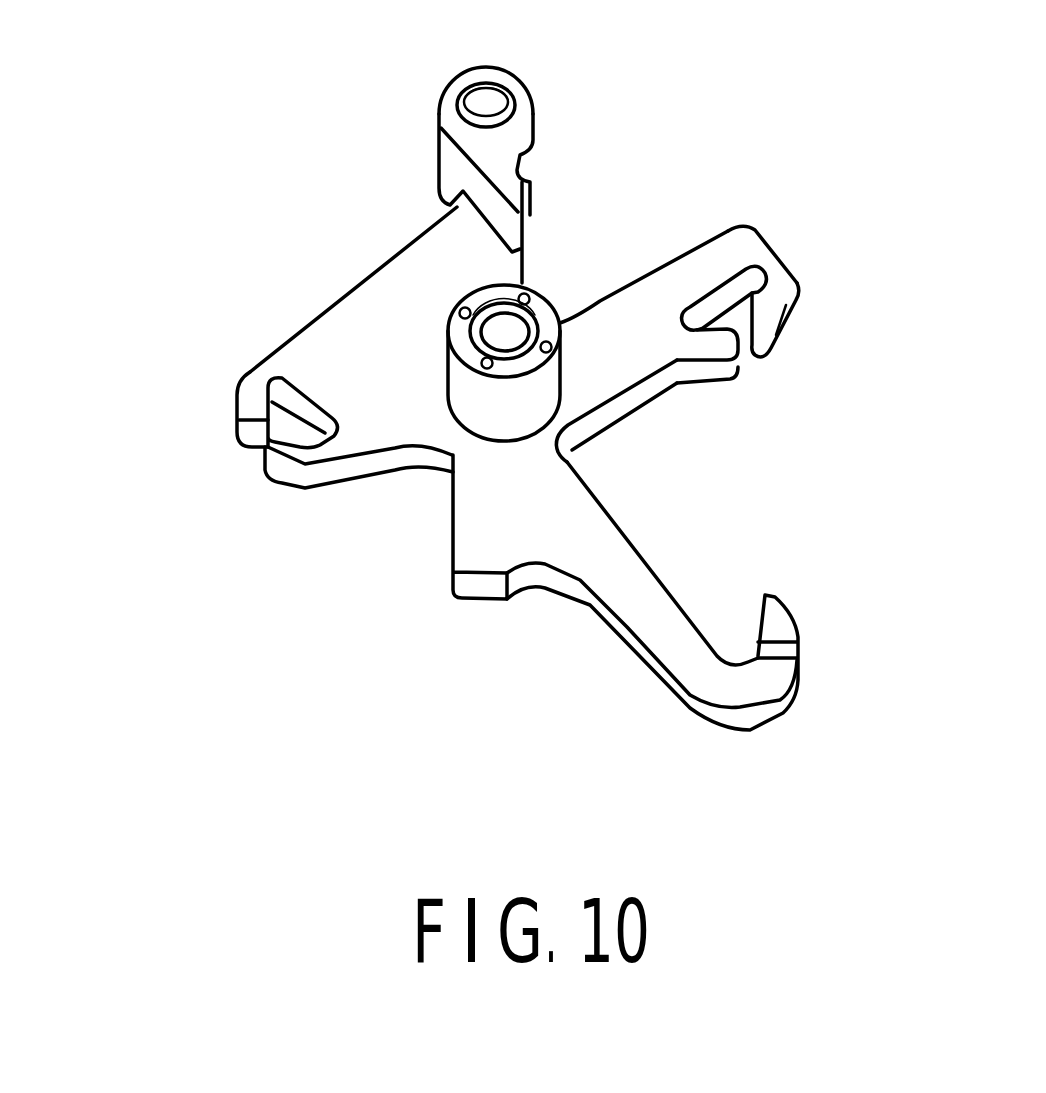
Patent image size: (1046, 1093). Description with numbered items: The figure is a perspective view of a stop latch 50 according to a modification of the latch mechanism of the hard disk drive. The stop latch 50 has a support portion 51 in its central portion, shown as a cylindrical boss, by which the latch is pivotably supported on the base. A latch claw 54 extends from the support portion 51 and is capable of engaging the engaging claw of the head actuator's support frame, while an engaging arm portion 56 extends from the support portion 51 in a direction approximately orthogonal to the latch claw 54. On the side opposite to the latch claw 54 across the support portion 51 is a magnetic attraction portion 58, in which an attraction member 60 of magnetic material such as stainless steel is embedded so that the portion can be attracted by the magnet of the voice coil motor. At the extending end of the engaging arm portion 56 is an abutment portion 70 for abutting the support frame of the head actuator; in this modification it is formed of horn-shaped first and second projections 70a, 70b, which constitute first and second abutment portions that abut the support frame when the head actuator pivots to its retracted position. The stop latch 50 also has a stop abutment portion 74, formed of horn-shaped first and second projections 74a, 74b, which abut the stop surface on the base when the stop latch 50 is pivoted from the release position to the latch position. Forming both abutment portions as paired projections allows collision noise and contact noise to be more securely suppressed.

The stop latch 50 is at (338, 268).
The support portion 51 is at (475, 405).
The latch claw 54 is at (722, 690).
The engaging arm portion 56 is at (693, 268).
The magnetic attraction portion 58 is at (447, 147).
The attraction member 60 is at (488, 110).
The abutment portion 70 is at (812, 342).
The first projection 70a is at (795, 320).
The second projection 70b is at (708, 362).
The stop abutment portion 74 is at (252, 477).
The first projection 74a is at (287, 468).
The second projection 74b is at (262, 403).